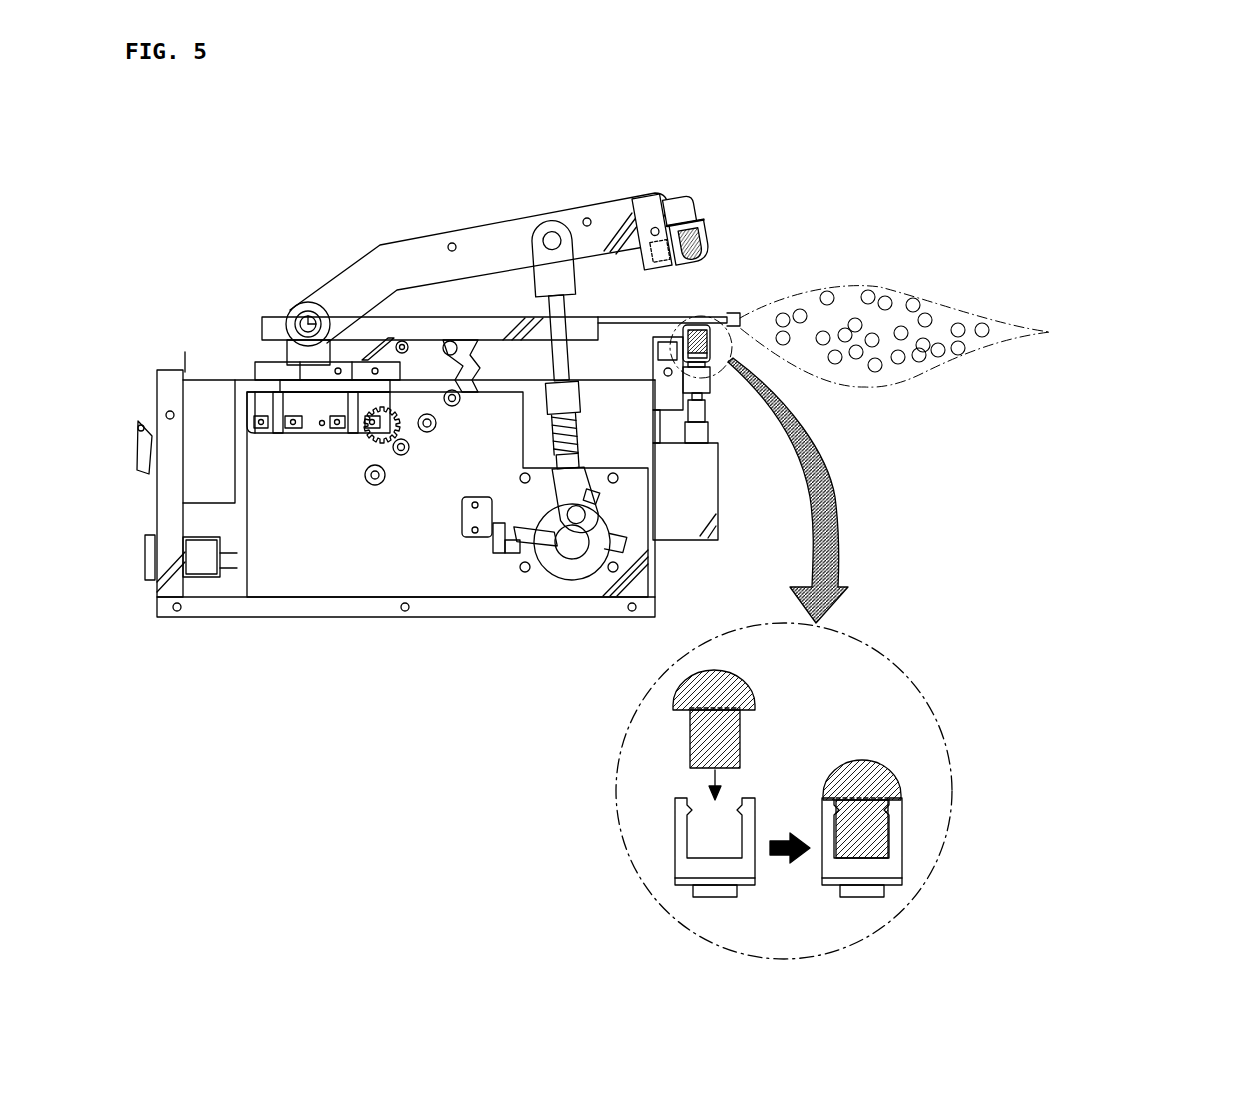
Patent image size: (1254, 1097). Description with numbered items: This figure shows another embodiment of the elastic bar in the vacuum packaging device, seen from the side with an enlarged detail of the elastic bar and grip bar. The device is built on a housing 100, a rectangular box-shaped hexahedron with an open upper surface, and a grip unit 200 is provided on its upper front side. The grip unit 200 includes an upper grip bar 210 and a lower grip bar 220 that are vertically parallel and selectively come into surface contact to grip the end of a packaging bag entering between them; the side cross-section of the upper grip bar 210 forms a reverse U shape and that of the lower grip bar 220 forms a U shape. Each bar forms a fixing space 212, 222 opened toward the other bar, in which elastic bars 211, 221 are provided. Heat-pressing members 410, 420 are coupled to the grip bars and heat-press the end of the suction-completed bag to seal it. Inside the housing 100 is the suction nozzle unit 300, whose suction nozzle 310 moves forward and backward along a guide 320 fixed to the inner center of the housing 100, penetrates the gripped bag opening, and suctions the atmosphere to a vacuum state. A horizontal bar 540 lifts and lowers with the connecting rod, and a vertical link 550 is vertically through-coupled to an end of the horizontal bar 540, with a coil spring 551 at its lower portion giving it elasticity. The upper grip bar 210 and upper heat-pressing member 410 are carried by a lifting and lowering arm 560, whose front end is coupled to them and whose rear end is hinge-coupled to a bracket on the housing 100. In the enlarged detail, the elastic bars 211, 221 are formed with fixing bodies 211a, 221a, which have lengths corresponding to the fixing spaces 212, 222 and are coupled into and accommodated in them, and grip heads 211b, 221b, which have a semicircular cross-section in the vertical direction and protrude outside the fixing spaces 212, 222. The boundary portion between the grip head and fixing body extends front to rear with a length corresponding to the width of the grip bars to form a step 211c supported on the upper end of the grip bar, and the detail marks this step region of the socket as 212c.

The housing 100 is at (325, 572).
The grip unit 200 is at (723, 219).
The upper grip bar 210 is at (682, 206).
The elastic bar 211 is at (692, 226).
The fixing body 211a is at (692, 716).
The grip head 211b is at (697, 680).
The step 211c is at (705, 747).
The fixing space 212 is at (706, 836).
The socket locking notch 212c is at (752, 724).
The lower grip bar 220 is at (706, 386).
The elastic bar 221 is at (731, 345).
The fixing body 221a is at (895, 837).
The grip head 221b is at (890, 763).
The fixing space 222 is at (897, 870).
The suction nozzle unit 300 is at (497, 303).
The suction nozzle 310 is at (680, 318).
The guide 320 is at (387, 332).
The upper heat-pressing member 410 is at (659, 251).
The lower heat-pressing member 420 is at (672, 402).
The horizontal bar 540 is at (546, 400).
The vertical link 550 is at (590, 300).
The coil spring 551 is at (575, 412).
The lifting and lowering arm 560 is at (392, 263).